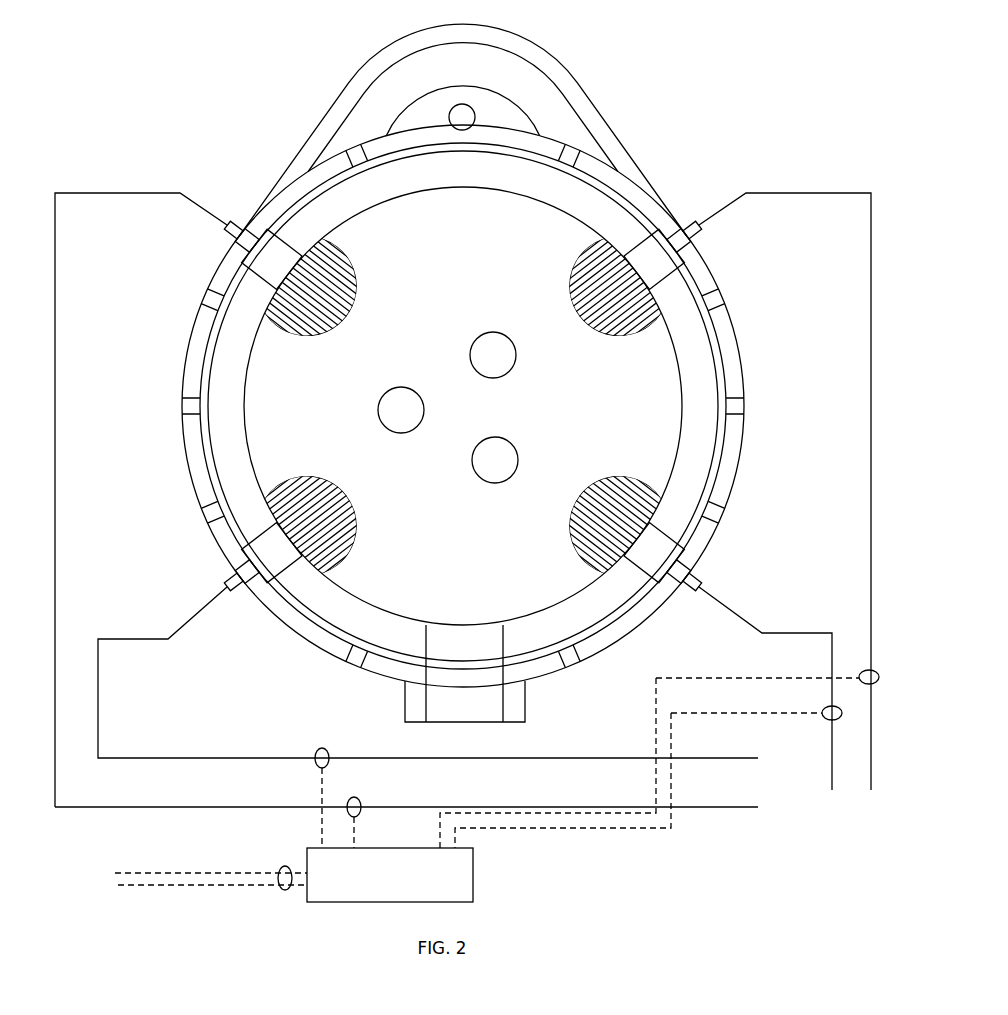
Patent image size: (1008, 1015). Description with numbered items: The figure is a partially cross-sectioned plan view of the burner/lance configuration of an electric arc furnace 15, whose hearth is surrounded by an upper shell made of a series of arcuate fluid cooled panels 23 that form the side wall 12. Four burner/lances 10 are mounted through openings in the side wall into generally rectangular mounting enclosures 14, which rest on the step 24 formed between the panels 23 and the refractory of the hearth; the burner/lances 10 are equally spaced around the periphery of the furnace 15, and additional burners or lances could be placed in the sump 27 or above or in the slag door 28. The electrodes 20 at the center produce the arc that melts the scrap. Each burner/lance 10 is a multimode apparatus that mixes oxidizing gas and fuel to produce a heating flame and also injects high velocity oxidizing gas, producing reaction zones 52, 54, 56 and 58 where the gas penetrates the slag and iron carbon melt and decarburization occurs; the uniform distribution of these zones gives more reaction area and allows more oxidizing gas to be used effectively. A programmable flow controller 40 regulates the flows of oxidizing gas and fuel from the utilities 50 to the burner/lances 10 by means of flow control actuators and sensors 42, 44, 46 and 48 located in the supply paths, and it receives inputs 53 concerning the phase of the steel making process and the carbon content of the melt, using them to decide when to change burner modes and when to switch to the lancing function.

The burner/lance 10 is at (236, 227).
The side wall 12 is at (245, 420).
The mounting enclosure 14 is at (297, 250).
The electric arc furnace 15 is at (824, 327).
The electrodes 20 is at (425, 405).
The fluid cooled panels 23 is at (598, 172).
The step 24 is at (700, 377).
The sump 27 is at (487, 110).
The slag door 28 is at (470, 723).
The flow controller 40 is at (473, 888).
The flow control actuator and sensor 42 is at (318, 749).
The flow control actuator and sensor 44 is at (361, 815).
The flow control actuator and sensor 46 is at (824, 720).
The flow control actuator and sensor 48 is at (878, 673).
The utilities 50 is at (858, 825).
The reaction zone 52 is at (343, 316).
The inputs 53 is at (289, 891).
The reaction zone 54 is at (345, 508).
The reaction zone 56 is at (604, 486).
The reaction zone 58 is at (603, 331).